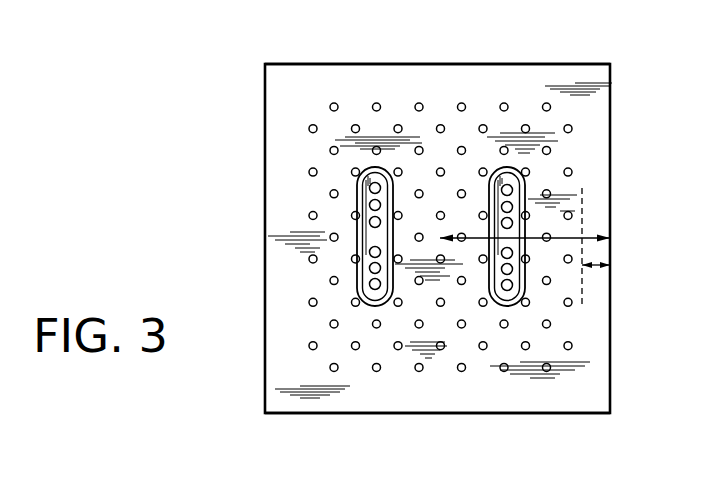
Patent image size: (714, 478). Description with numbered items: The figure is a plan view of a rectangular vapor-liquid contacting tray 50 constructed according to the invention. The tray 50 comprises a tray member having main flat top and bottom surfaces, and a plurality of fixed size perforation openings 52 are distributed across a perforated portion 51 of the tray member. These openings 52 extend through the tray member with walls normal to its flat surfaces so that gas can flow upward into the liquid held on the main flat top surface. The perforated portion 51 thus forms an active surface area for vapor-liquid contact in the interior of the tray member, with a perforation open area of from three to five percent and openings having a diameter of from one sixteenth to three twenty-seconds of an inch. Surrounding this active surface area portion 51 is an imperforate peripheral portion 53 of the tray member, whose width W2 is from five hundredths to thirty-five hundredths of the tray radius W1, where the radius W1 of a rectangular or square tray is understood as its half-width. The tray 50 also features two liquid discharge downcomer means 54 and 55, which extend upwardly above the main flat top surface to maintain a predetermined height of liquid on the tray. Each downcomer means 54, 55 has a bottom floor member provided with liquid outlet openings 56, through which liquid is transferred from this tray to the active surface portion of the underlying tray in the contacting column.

The tray 50 is at (622, 108).
The perforated portion 51 is at (394, 362).
The perforation openings 52 is at (461, 372).
The imperforate peripheral portion 53 is at (463, 75).
The liquid discharge downcomer means 54 is at (356, 272).
The liquid discharge downcomer means 55 is at (524, 188).
The liquid outlet openings 56 is at (373, 223).
The half-width of the tray W1 is at (525, 246).
The width of the imperforate peripheral portion W2 is at (597, 268).